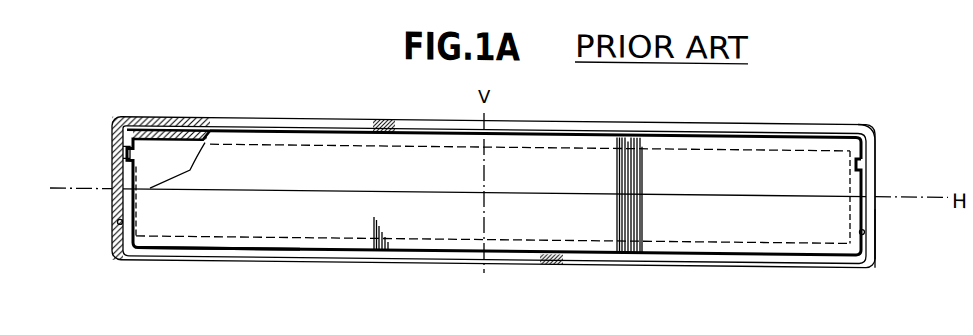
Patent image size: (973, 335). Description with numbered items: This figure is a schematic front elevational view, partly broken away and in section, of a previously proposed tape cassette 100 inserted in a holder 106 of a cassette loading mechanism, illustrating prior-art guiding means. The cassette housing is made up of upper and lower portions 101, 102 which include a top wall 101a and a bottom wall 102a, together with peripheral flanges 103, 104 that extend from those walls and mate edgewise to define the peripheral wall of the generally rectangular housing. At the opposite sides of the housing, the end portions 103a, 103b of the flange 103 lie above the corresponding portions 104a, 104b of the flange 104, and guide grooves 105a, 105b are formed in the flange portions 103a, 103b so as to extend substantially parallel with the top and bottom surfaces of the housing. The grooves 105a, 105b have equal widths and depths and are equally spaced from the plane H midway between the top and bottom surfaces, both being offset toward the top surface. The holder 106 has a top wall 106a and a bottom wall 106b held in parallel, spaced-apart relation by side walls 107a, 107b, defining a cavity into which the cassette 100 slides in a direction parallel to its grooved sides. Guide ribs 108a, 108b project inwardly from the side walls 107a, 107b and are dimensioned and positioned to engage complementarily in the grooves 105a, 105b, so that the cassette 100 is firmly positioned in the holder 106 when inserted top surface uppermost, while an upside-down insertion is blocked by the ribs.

The tape cassette 100 is at (494, 154).
The upper portion of cassette housing 101 is at (363, 140).
The top wall 101a is at (210, 130).
The lower portion of cassette housing 102 is at (445, 243).
The bottom wall 102a is at (155, 240).
The peripheral flange 103 is at (414, 148).
The flange portion 103a is at (217, 109).
The flange portion 103b is at (863, 139).
The peripheral flange 104 is at (358, 224).
The flange portion 104a is at (213, 226).
The flange portion 104b is at (859, 223).
The guide groove 105a is at (247, 180).
The guide groove 105b is at (858, 159).
The holder 106 is at (641, 90).
The top wall of holder 106a is at (720, 104).
The bottom wall of holder 106b is at (648, 298).
The side wall of holder 107a is at (117, 221).
The side wall of holder 107b is at (933, 228).
The guide rib 108a is at (120, 161).
The guide rib 108b is at (933, 174).